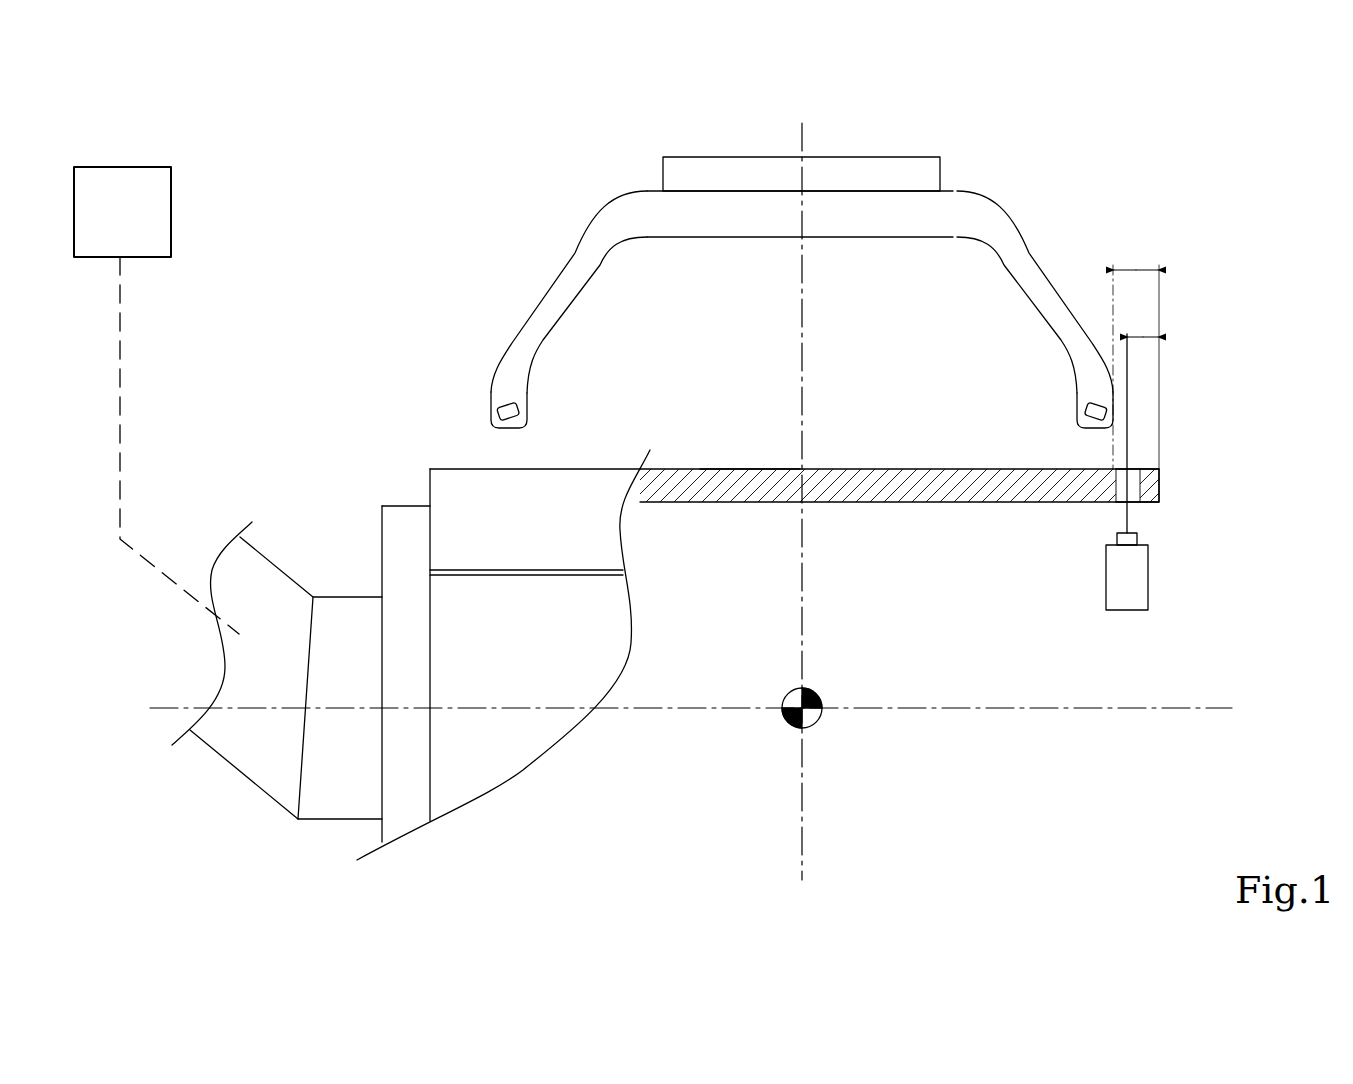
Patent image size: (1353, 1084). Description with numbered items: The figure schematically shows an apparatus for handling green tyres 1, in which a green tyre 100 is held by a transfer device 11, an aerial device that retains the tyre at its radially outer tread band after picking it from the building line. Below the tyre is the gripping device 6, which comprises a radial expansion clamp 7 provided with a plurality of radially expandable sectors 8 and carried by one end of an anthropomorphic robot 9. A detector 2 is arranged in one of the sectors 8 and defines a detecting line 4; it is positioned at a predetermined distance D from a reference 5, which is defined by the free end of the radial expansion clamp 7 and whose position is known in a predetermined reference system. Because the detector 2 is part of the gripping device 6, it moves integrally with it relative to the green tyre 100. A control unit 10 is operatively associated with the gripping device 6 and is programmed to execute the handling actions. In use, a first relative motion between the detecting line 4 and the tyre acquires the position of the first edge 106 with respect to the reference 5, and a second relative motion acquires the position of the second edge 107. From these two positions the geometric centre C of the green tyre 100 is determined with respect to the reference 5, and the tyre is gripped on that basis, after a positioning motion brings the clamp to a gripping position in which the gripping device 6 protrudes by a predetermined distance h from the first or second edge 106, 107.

The apparatus for handling green tyres 1 is at (1086, 160).
The detector 2 is at (1135, 581).
The detecting line 4 is at (1127, 365).
The reference 5 is at (1160, 484).
The gripping device 6 is at (452, 468).
The radial expansion clamp 7 is at (897, 467).
The radially expandable sectors 8 is at (750, 487).
The anthropomorphic robot 9 is at (272, 572).
The control unit 10 is at (137, 228).
The transfer device 11 is at (897, 172).
The green tyre 100 is at (568, 252).
The first edge 106 is at (487, 412).
The second edge 107 is at (1115, 408).
The geometric centre C is at (808, 712).
The predetermined distance D is at (1140, 337).
The predetermined distance h is at (1139, 271).